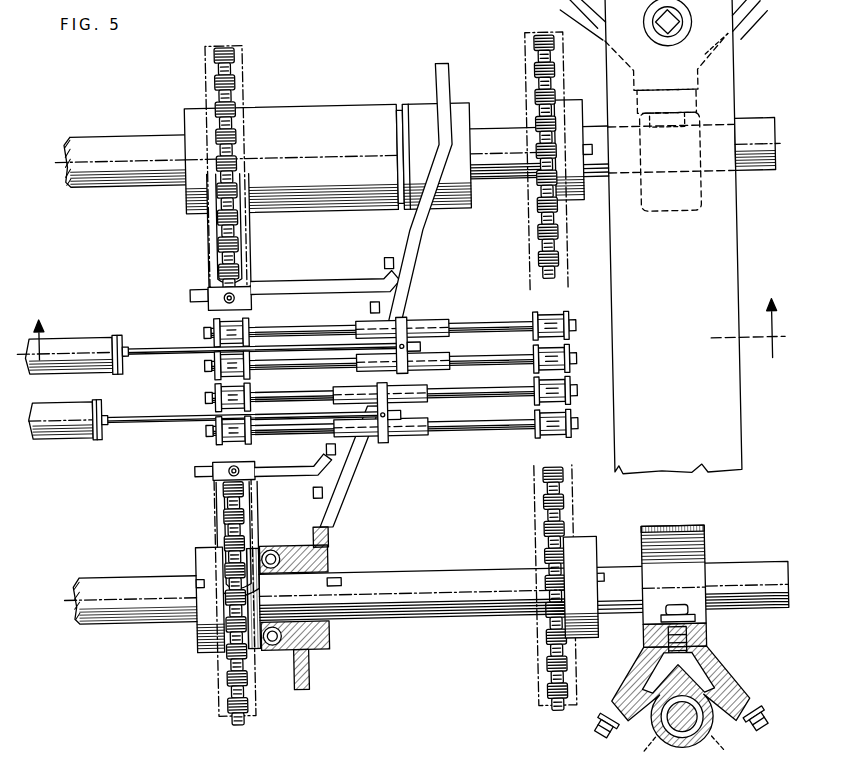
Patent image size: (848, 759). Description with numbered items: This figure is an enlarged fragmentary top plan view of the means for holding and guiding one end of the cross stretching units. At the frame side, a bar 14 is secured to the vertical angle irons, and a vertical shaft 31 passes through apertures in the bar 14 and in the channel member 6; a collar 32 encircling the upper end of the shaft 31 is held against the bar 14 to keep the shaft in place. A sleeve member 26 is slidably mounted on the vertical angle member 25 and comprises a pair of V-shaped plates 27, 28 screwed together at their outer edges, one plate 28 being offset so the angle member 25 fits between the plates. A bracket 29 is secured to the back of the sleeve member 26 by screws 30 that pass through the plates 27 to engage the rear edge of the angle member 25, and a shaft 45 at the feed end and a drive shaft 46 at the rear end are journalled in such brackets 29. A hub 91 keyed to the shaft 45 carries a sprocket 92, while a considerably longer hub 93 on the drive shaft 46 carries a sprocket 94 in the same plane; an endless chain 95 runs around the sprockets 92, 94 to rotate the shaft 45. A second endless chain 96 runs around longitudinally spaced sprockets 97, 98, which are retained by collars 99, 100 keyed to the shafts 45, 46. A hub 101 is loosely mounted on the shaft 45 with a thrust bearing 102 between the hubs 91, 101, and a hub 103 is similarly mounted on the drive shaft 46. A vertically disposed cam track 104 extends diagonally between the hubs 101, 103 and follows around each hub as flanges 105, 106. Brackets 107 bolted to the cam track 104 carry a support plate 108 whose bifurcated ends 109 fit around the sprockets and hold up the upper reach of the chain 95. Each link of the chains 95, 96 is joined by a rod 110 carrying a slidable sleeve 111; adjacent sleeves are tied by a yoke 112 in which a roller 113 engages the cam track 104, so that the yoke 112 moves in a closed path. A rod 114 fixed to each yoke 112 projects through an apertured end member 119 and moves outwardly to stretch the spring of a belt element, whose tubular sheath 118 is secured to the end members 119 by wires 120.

The bar 14 is at (688, 310).
The drive shaft 46 is at (134, 148).
The hub 93 is at (306, 114).
The hub 103 is at (426, 112).
The collar 100 is at (576, 106).
The sprocket 94 is at (240, 70).
The sprocket 98 is at (542, 85).
The sprocket 92 is at (226, 672).
The sprocket 97 is at (546, 520).
The endless chain 95 is at (216, 445).
The endless chain 96 is at (564, 318).
The bifurcated ends 109 is at (214, 238).
The support plate 108 is at (214, 297).
The brackets 107 is at (328, 266).
The flange 106 is at (455, 75).
The cam track 104 is at (428, 246).
The rod 110 is at (306, 328).
The sleeve 111 is at (444, 320).
The yoke 112 is at (408, 318).
The roller 113 is at (421, 352).
The rod 114 is at (166, 344).
The tubular sheath 118 is at (62, 338).
The end member 119 is at (128, 358).
The wires 120 is at (116, 330).
The shaft 45 is at (96, 580).
The hub 91 is at (196, 558).
The thrust bearing 102 is at (272, 548).
The hub 101 is at (325, 644).
The flange 105 is at (304, 680).
The collar 99 is at (588, 544).
The bracket 29 is at (700, 528).
The screws 30 is at (688, 640).
The sleeve member 26 is at (629, 678).
The V-shaped plate 28 is at (716, 738).
The vertical angle member 25 is at (756, 28).
The V-shaped plate 27 is at (580, 10).
The collar 32 is at (652, 28).
The vertical shaft 31 is at (662, 44).
The channel members 6 is at (408, 323).